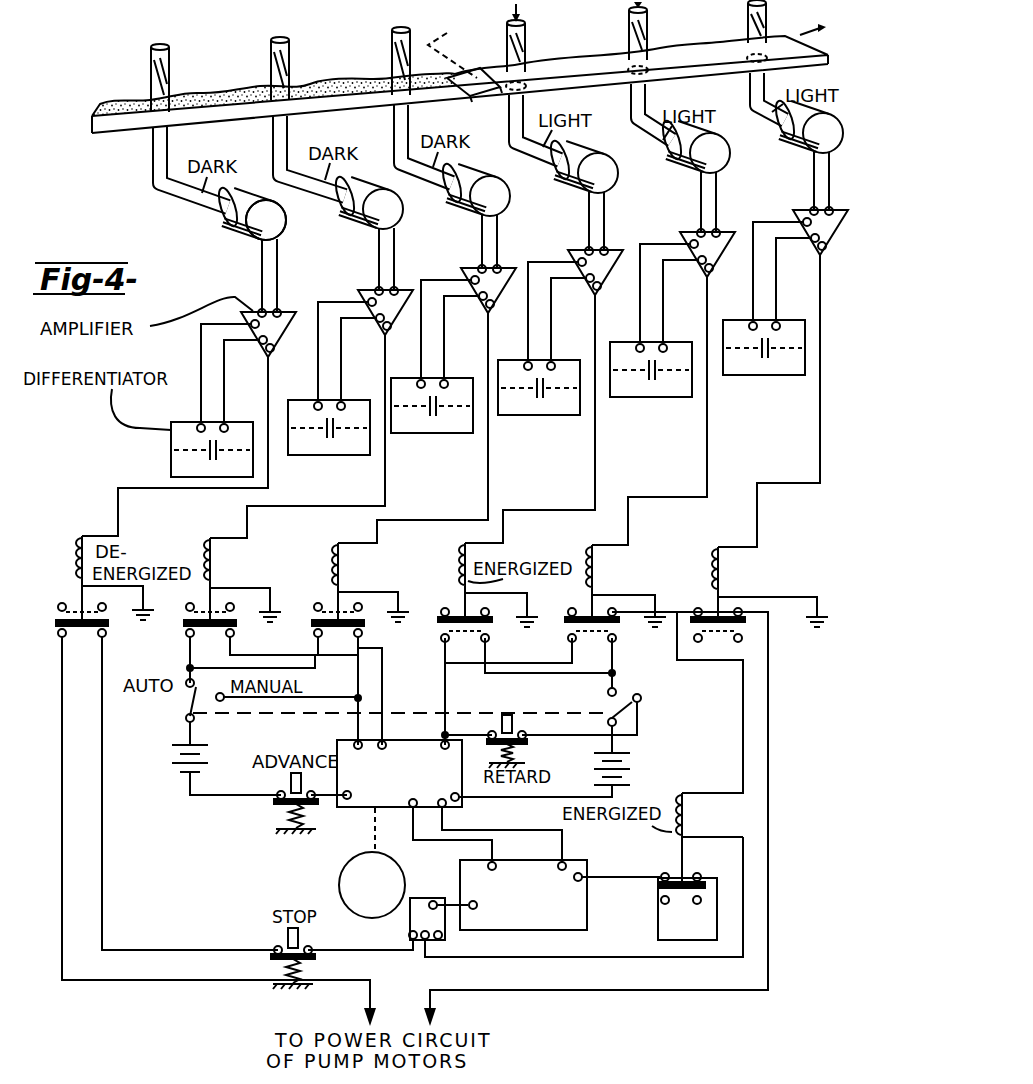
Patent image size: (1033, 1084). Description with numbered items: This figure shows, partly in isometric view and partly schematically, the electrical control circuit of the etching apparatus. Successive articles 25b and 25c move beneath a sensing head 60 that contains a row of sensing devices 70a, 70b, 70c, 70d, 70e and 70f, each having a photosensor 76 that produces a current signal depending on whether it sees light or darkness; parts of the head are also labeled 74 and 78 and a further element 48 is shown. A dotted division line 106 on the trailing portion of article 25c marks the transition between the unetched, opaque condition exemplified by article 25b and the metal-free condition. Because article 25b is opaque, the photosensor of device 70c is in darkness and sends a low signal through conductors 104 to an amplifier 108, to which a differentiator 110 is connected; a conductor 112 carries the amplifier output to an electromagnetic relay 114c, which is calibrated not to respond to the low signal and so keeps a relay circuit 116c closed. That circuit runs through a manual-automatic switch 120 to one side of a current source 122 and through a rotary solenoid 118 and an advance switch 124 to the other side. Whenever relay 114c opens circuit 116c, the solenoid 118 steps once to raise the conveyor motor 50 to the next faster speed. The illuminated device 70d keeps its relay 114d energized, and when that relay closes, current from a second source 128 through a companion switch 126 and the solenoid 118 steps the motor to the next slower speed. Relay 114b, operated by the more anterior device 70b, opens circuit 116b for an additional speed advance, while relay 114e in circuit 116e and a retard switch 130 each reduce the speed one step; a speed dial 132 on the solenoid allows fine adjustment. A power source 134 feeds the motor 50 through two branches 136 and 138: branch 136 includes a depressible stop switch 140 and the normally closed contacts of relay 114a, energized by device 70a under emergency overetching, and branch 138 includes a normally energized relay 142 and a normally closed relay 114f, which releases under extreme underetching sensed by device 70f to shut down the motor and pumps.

The sensing device 70a is at (178, 66).
The sensing device 70b is at (299, 59).
The sensing device 70c is at (419, 49).
The sensing device 70d is at (534, 47).
The sensing device 70e is at (656, 38).
The sensing device 70f is at (778, 31).
The probe tube 74 is at (190, 80).
The article 25b is at (449, 101).
The article 25c is at (474, 71).
The dotted division line 106 is at (453, 48).
The photosensor 76 is at (529, 169).
The light pipe 78 is at (459, 140).
The sensing head 60 is at (240, 223).
The conductors 104 is at (545, 232).
The amplifier 108 is at (544, 282).
The differentiator 110 is at (473, 351).
The conductor 112 is at (451, 401).
The control circuit 48 is at (249, 290).
The relay 114a is at (90, 586).
The relay 114b is at (232, 587).
The electromagnetic relay 114c is at (346, 590).
The electromagnetic relay 114d is at (477, 592).
The relay 114e is at (615, 593).
The relay 114f is at (759, 594).
The relay circuit 116b is at (294, 700).
The relay circuit 116c is at (405, 694).
The relay circuit 116e is at (416, 691).
The rotary solenoid 118 is at (396, 784).
The manual-automatic switch 120 is at (160, 712).
The current source 122 is at (200, 770).
The advance switch 124 is at (285, 803).
The manual-automatic switch 126 is at (633, 702).
The current source 128 is at (564, 775).
The retard switch 130 is at (529, 731).
The speed dial 132 is at (357, 863).
The power source 134 is at (438, 909).
The branch 136 is at (219, 831).
The branch 138 is at (596, 819).
The stop switch 140 is at (277, 956).
The relay 142 is at (692, 866).
The conveyor motor 50 is at (560, 898).